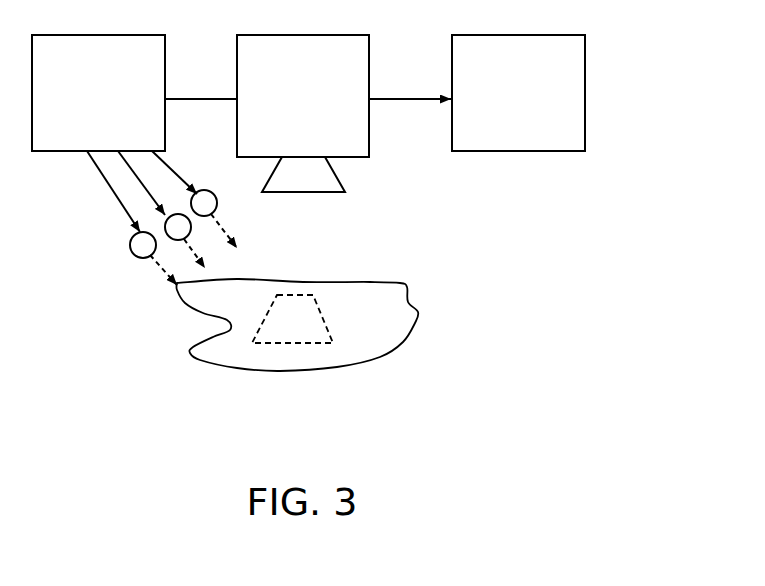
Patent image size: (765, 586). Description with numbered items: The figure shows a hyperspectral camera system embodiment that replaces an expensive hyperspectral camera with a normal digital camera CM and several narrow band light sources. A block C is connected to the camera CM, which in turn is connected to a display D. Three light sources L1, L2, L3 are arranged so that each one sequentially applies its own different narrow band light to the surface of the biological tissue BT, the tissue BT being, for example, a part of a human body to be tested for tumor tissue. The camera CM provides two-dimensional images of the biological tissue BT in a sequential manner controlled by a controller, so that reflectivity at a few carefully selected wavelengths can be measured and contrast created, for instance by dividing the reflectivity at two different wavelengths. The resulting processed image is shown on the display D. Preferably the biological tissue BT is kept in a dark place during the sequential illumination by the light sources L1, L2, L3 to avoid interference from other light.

The camera C is at (98, 93).
The digital camera CM is at (303, 113).
The display D is at (518, 93).
The light source L1 is at (143, 245).
The light source L2 is at (178, 227).
The light source L3 is at (204, 203).
The biological tissue BT is at (185, 360).